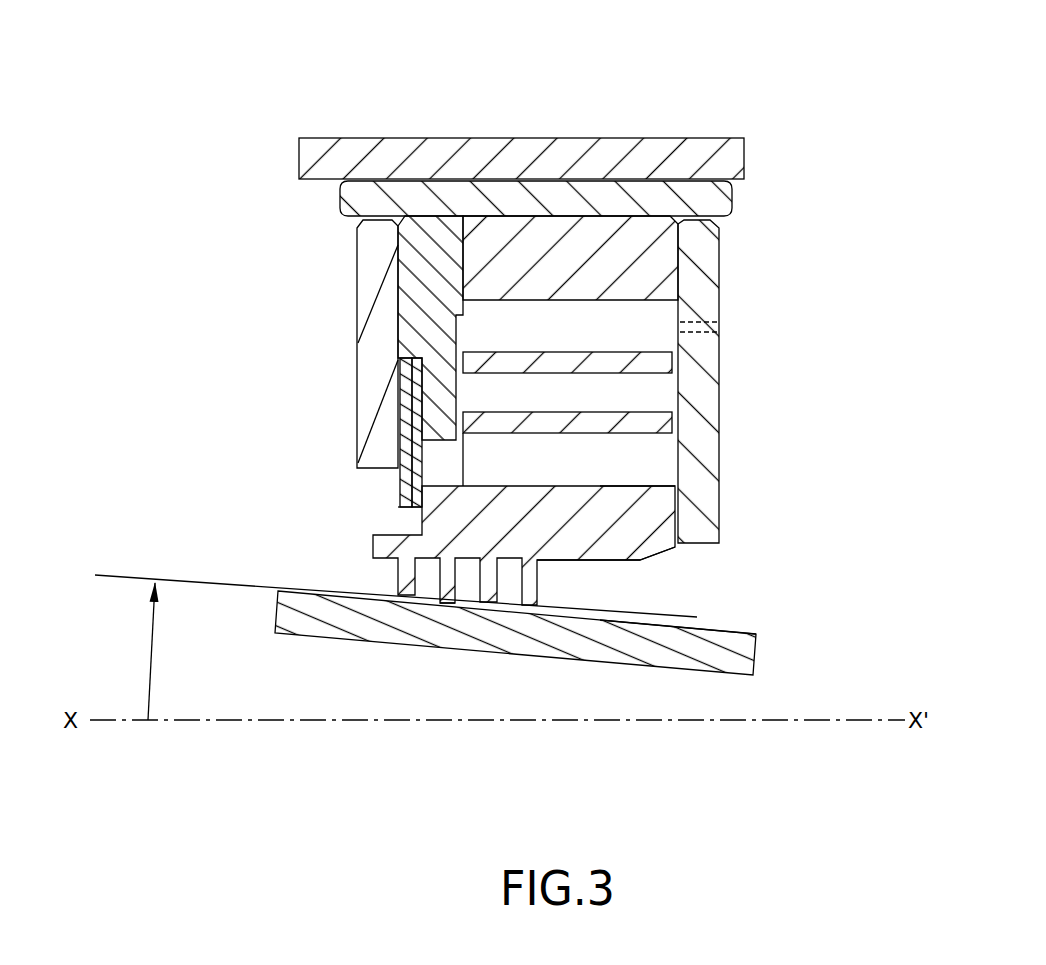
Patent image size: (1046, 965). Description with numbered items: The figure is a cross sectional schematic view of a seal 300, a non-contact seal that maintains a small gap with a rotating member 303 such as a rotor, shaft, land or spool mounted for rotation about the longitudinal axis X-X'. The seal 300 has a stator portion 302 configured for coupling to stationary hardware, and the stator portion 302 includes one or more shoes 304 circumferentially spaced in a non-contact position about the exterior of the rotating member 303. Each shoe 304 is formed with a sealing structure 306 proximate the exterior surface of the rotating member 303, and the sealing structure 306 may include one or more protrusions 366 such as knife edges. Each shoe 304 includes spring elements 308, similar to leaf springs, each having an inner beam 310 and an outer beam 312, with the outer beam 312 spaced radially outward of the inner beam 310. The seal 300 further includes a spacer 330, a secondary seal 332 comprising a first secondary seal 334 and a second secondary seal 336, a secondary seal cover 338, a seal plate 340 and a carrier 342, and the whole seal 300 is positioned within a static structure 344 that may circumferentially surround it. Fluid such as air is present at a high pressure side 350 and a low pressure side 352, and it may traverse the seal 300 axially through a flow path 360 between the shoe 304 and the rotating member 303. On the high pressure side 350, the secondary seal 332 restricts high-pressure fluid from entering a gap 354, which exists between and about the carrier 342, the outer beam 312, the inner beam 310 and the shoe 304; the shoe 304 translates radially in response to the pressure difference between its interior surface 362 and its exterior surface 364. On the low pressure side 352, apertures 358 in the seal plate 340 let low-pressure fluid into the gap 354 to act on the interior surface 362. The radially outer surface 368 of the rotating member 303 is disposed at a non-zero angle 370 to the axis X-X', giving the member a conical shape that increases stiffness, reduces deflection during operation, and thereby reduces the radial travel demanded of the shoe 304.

The seal 300 is at (212, 112).
The stator portion 302 is at (666, 235).
The rotating member 303 is at (757, 652).
The shoe 304 is at (665, 508).
The sealing structure 306 is at (598, 597).
The spring element 308 is at (660, 389).
The inner beam 310 is at (665, 420).
The outer beam 312 is at (665, 362).
The spacer 330 is at (412, 233).
The secondary seal 332 is at (388, 508).
The first secondary seal 334 is at (420, 453).
The second secondary seal 336 is at (403, 480).
The secondary seal cover 338 is at (366, 275).
The seal plate 340 is at (712, 271).
The carrier 342 is at (724, 189).
The static structure 344 is at (745, 150).
The high pressure side 350 is at (182, 362).
The low pressure side 352 is at (875, 353).
The gap 354 is at (653, 452).
The aperture 358 is at (720, 327).
The flow path 360 is at (697, 615).
The interior surface 362 is at (647, 485).
The exterior surface 364 is at (640, 567).
The protrusion 366 is at (452, 584).
The radially outer surface 368 is at (745, 632).
The non-zero angle 370 is at (152, 657).